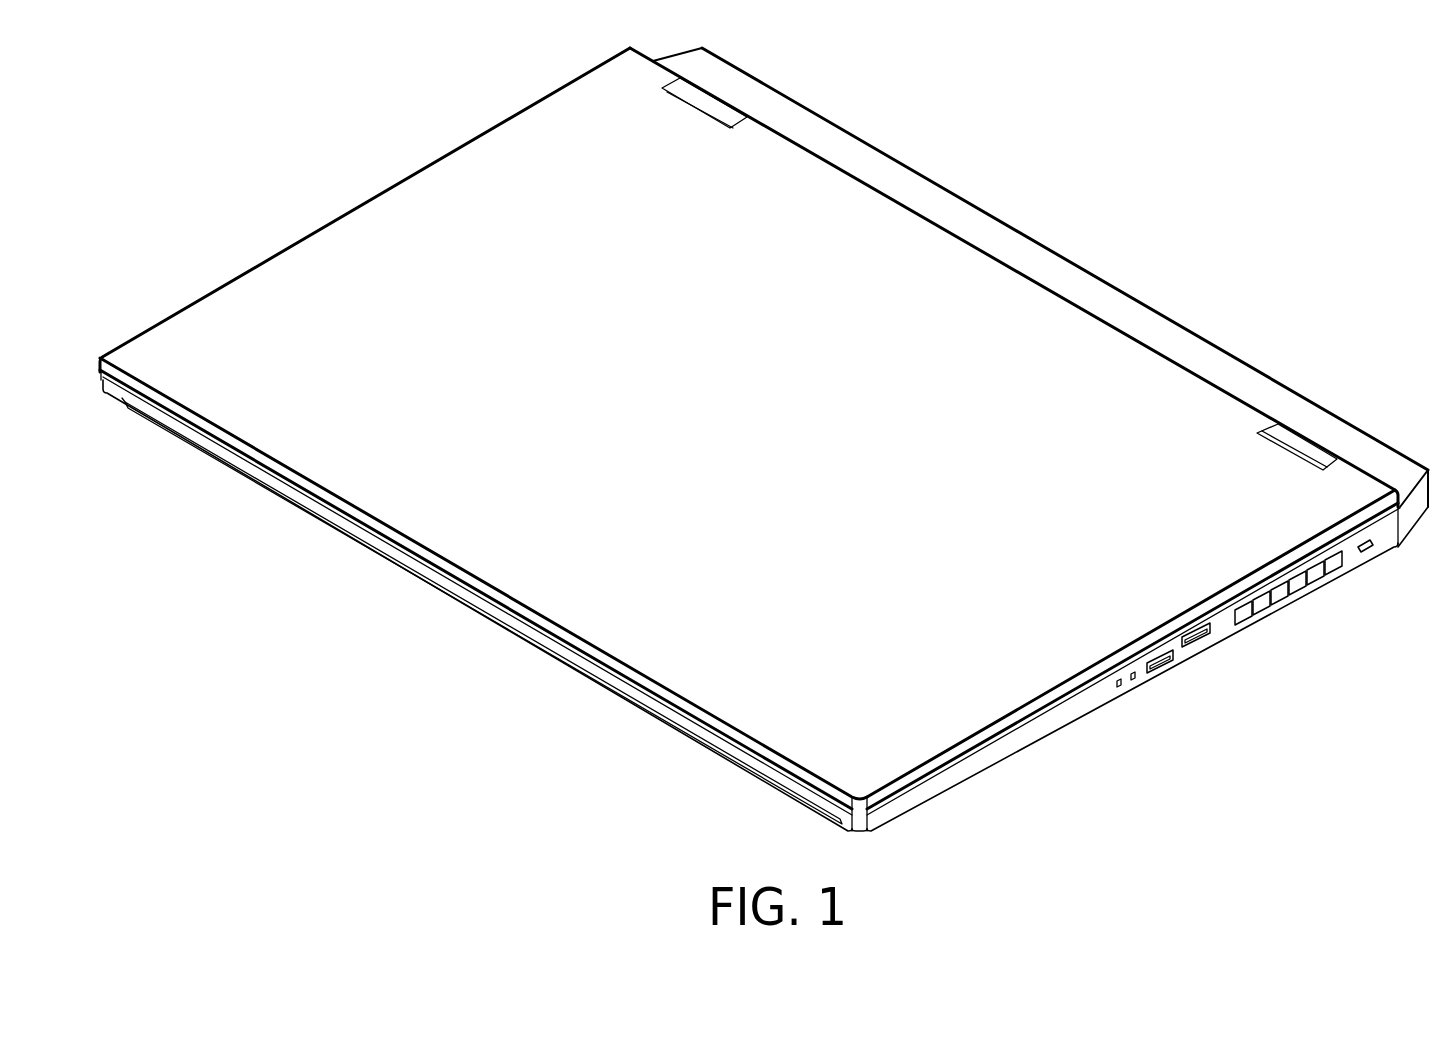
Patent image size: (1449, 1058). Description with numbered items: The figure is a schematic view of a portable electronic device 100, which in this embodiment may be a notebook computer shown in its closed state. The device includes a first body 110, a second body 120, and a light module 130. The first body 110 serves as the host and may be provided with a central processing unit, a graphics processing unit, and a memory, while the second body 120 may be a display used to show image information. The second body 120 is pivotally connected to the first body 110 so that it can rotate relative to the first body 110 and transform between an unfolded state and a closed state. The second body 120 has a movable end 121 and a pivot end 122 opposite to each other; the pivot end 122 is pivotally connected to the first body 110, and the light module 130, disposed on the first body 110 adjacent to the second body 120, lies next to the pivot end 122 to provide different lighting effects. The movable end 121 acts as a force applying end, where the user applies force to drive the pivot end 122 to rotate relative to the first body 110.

The portable electronic device 100 is at (1437, 852).
The first body 110 is at (1040, 727).
The second body 120 is at (402, 240).
The movable end 121 is at (512, 562).
The pivot end 122 is at (1163, 383).
The light module 130 is at (1108, 257).